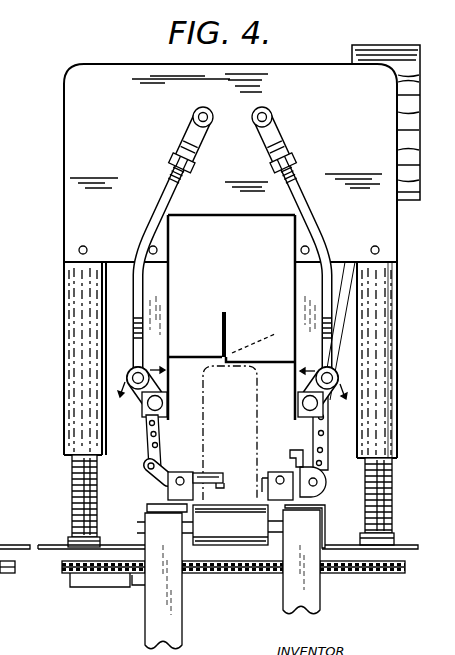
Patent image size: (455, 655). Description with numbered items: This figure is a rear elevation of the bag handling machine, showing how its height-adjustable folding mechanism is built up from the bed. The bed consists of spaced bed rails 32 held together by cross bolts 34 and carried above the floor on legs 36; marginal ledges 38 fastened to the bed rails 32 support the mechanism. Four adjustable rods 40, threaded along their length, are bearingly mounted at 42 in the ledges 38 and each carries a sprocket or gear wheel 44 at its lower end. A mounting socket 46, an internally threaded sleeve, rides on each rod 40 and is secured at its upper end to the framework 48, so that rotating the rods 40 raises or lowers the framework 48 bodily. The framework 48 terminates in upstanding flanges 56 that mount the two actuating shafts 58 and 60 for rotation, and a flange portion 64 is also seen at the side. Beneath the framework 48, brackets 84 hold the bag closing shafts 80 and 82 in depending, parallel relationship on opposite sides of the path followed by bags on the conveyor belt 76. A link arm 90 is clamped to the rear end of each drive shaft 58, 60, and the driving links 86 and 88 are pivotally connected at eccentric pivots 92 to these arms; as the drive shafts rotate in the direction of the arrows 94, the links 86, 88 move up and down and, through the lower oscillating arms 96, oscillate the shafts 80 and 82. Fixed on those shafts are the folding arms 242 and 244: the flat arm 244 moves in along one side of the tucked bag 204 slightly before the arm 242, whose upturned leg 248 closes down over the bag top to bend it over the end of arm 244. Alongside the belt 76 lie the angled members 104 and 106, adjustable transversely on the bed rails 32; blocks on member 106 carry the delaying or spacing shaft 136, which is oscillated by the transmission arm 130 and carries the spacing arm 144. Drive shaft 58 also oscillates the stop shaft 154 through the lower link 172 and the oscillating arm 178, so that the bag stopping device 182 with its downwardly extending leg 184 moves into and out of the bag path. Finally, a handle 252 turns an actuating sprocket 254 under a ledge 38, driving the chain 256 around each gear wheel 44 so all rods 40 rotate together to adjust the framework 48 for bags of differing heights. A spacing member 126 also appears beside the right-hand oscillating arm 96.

The bed rails 32 is at (146, 504).
The cross bolts 34 is at (294, 530).
The legs 36 is at (180, 612).
The marginal ledges 38 is at (111, 545).
The adjustable rods 40 is at (75, 487).
The bearing mountings 42 is at (70, 537).
The sprocket or gear wheel 44 is at (62, 565).
The mounting socket 46 is at (70, 372).
The framework 48 is at (386, 224).
The upstanding flanges 56 is at (69, 158).
The actuating or operating shaft 58 is at (177, 143).
The actuating or operating shaft 60 is at (287, 148).
The flange 64 is at (370, 50).
The conveyor belt 76 is at (250, 539).
The bag closing shaft 80 is at (164, 402).
The bag closing shaft 82 is at (310, 403).
The brackets 84 is at (164, 286).
The driving link 86 is at (140, 215).
The driving link 88 is at (319, 213).
The link arm 90 is at (191, 159).
The pivots 92 is at (206, 110).
The arrows 94 is at (169, 118).
The oscillating arm 96 is at (142, 394).
The angled member 104 is at (191, 511).
The angled member 106 is at (266, 482).
The bar 126 is at (325, 447).
The oscillating transmission arm 130 is at (317, 482).
The delaying or spacing shaft 136 is at (279, 474).
The delay or spacing arm 144 is at (294, 448).
The stop shaft 154 is at (167, 489).
The lower link member 172 is at (148, 442).
The oscillating arm 178 is at (148, 464).
The bag stopping device 182 is at (185, 471).
The leg 184 is at (223, 484).
The tucked bag 204 is at (258, 397).
The folding arm 242 is at (195, 357).
The folding arm 244 is at (245, 360).
The upturned leg 248 is at (220, 320).
The handle 252 is at (69, 588).
The actuating sprocket 254 is at (138, 579).
The chain 256 is at (210, 574).